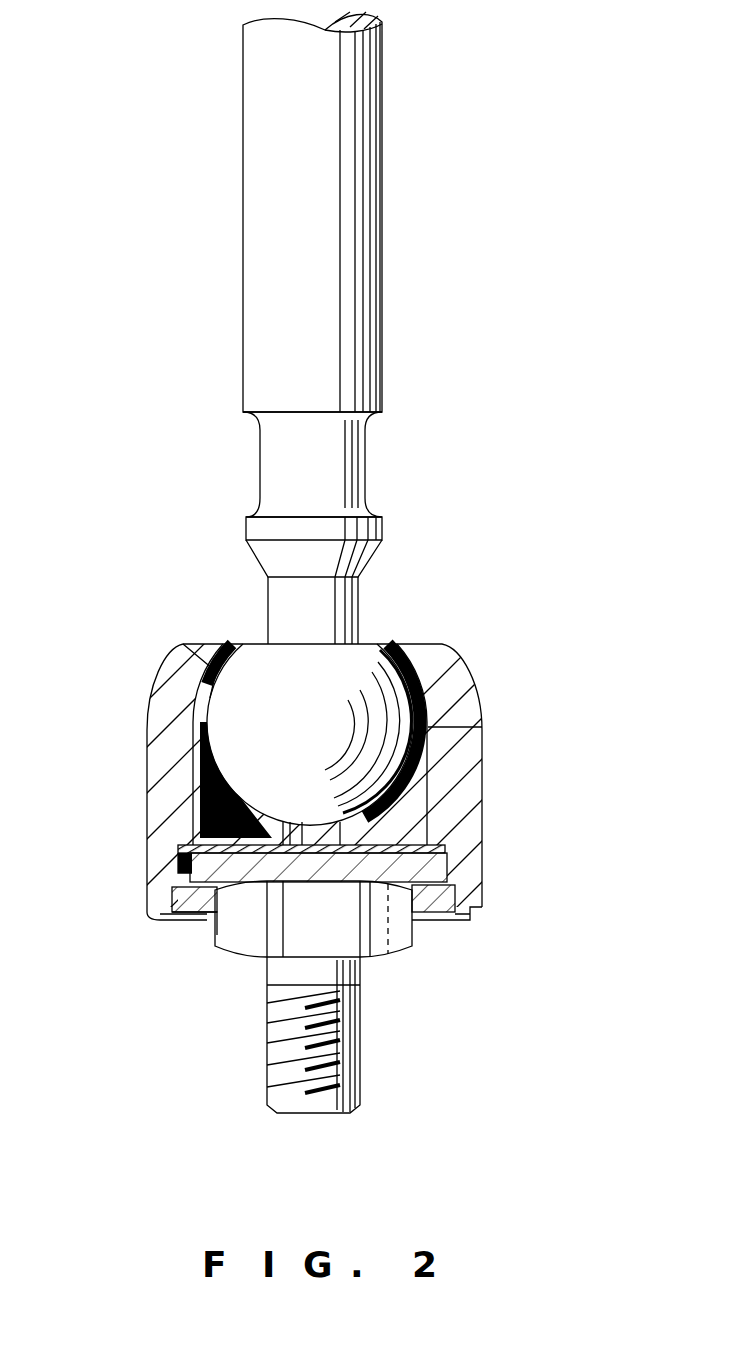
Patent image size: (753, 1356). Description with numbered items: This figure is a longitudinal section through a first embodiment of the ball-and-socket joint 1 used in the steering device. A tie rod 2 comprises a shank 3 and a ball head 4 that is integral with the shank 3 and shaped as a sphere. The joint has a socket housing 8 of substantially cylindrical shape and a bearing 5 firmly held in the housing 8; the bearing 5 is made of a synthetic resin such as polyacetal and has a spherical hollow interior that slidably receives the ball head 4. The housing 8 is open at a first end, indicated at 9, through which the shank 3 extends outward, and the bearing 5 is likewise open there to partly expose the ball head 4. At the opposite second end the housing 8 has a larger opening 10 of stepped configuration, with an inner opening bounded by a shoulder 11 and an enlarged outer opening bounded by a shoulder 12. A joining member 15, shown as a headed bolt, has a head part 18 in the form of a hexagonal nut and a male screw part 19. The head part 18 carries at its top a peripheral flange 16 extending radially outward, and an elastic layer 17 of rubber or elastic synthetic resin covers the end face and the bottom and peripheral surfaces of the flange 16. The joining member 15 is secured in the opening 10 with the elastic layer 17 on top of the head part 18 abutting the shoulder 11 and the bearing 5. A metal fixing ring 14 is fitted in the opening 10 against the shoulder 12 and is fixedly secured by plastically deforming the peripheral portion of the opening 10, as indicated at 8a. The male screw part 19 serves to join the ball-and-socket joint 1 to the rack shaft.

The ball-and-socket joint 1 is at (520, 644).
The tie rod 2 is at (405, 117).
The shank 3 is at (384, 264).
The ball head 4 is at (357, 663).
The bearing 5 is at (430, 727).
The socket housing 8 is at (485, 770).
The plastically deformed peripheral portion 8a is at (452, 921).
The opening at first end 9 is at (218, 662).
The opening at second end 10 is at (203, 925).
The shoulder of inner opening 11 is at (183, 864).
The shoulder of enlarged outer opening 12 is at (162, 899).
The metal fixing ring 14 is at (458, 893).
The joining member 15 is at (372, 1000).
The peripheral flange 16 is at (448, 868).
The elastic layer 17 is at (446, 840).
The head part 18 is at (413, 952).
The male screw part 19 is at (362, 1062).